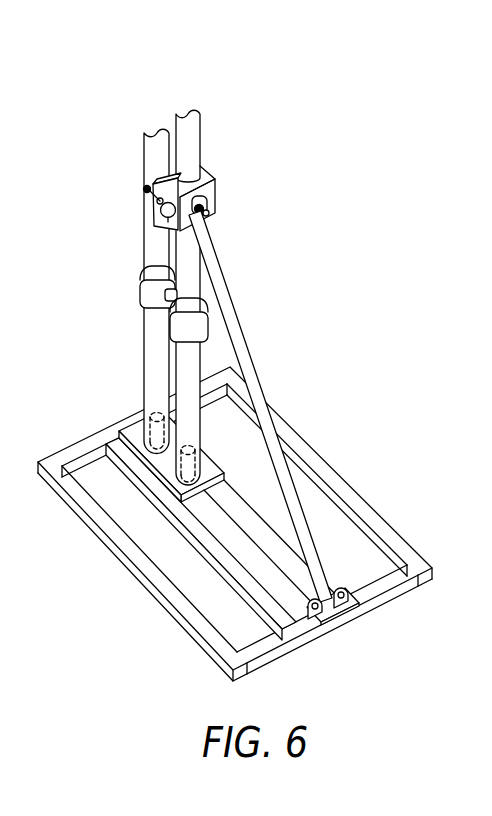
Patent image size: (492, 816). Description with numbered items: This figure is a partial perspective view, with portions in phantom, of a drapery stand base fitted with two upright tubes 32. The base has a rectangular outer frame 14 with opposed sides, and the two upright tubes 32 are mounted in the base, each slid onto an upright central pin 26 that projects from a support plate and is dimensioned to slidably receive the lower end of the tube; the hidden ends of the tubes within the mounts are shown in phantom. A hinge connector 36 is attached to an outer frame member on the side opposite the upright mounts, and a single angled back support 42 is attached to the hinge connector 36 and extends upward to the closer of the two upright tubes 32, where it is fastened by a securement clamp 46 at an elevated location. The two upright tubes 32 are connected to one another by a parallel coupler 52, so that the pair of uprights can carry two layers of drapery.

The outer frame 14 is at (326, 445).
The central pin 26 is at (175, 458).
The upright tube 32 is at (190, 128).
The hinge connector 36 is at (306, 624).
The angled back support 42 is at (227, 302).
The securement clamp 46 is at (207, 190).
The parallel coupler 52 is at (145, 293).